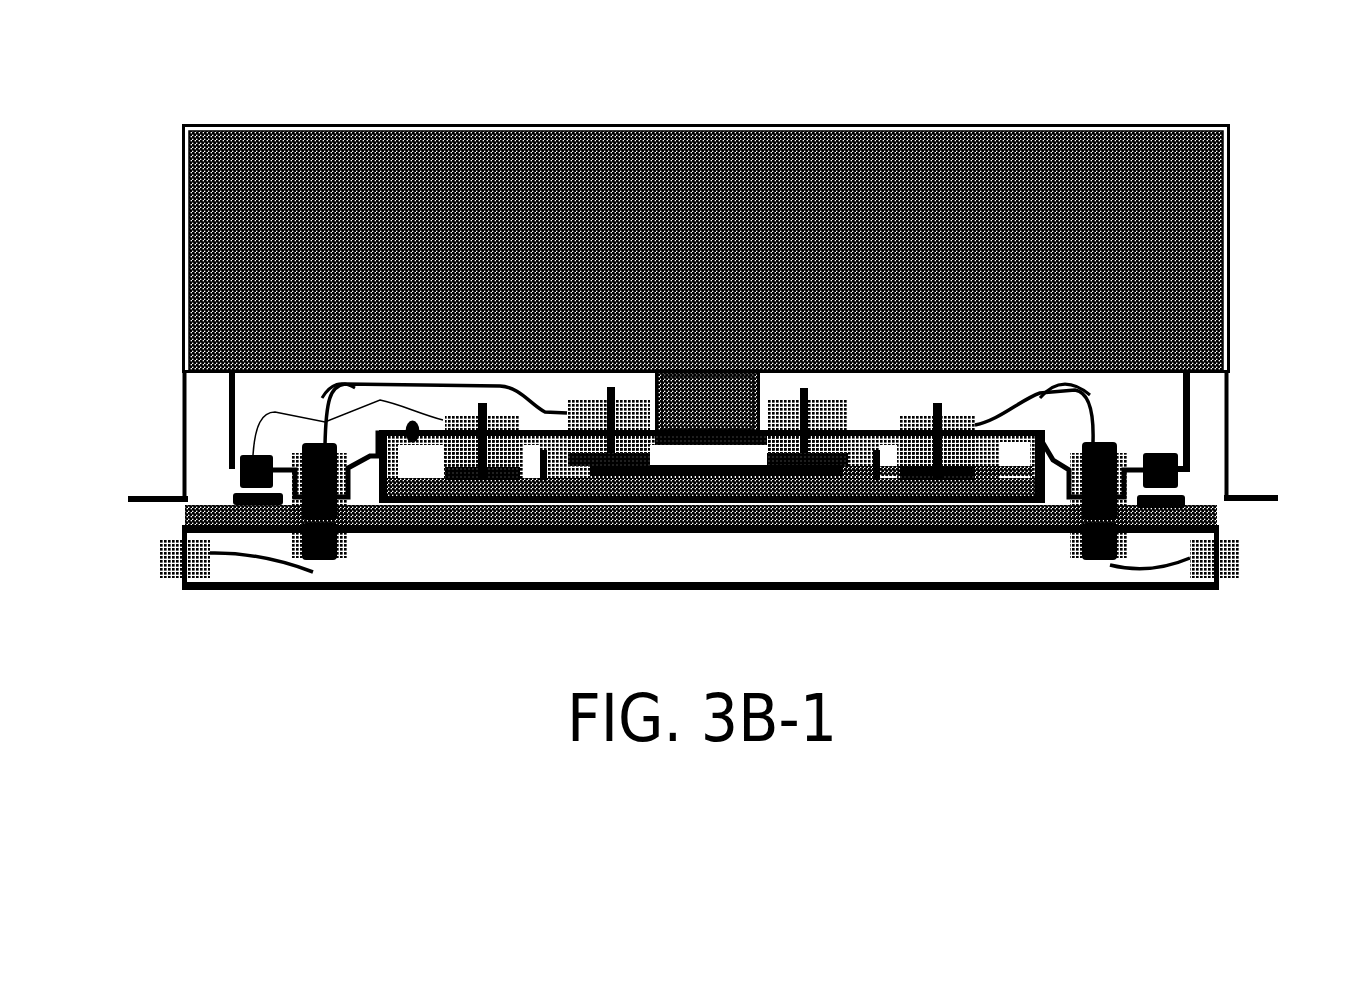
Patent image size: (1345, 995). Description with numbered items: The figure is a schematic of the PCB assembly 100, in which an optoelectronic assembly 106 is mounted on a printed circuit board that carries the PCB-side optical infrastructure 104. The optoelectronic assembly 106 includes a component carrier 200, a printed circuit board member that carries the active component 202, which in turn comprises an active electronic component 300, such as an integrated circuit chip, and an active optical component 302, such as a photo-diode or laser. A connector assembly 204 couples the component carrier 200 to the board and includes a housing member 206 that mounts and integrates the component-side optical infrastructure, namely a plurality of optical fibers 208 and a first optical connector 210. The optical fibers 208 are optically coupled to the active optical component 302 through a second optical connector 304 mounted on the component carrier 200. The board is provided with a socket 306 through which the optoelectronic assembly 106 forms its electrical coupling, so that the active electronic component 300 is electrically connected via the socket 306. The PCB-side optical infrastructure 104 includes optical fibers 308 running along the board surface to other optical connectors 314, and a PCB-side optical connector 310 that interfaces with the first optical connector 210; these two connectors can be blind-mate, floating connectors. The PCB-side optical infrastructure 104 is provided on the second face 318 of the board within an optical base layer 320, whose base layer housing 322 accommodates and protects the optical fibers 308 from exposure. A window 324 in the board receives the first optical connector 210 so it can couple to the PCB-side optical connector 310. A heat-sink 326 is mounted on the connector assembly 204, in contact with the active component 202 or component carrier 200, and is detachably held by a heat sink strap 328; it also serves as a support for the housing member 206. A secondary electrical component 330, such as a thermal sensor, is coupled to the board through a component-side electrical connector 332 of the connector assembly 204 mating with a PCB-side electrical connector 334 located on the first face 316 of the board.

The PCB assembly 100 is at (658, 98).
The PCB-side optical infrastructure 104 is at (316, 570).
The optoelectronic assembly 106 is at (250, 120).
The component carrier 200 is at (612, 483).
The active component 202 is at (737, 477).
The connector assembly 204 is at (218, 412).
The housing member 206 is at (1188, 413).
The optical fibers 208 is at (1040, 378).
The first optical connector 210 is at (262, 448).
The active electronic component 300 is at (711, 487).
The active optical component 302 is at (843, 470).
The second optical connector 304 is at (462, 455).
The socket 306 is at (1050, 477).
The optical fibers 308 is at (1163, 558).
The PCB-side optical connector 310 is at (1105, 562).
The optical connectors 314 is at (1213, 572).
The first face 316 is at (1208, 493).
The second face 318 is at (225, 535).
The optical base layer 320 is at (587, 570).
The base layer housing 322 is at (847, 478).
The window 324 is at (347, 523).
The heat-sink 326 is at (1196, 210).
The heat sink strap 328 is at (793, 125).
The secondary electrical component 330 is at (406, 422).
The component-side electrical connector 332 is at (238, 470).
The PCB-side electrical connector 334 is at (235, 497).